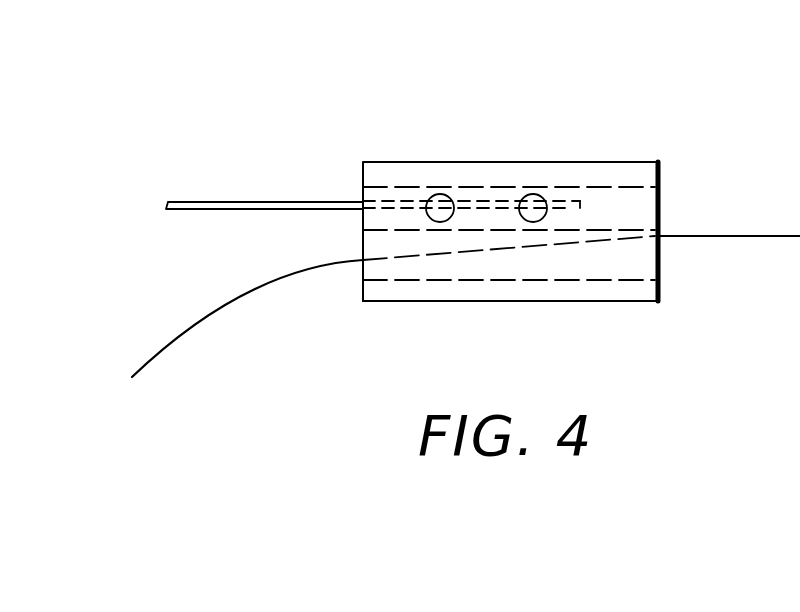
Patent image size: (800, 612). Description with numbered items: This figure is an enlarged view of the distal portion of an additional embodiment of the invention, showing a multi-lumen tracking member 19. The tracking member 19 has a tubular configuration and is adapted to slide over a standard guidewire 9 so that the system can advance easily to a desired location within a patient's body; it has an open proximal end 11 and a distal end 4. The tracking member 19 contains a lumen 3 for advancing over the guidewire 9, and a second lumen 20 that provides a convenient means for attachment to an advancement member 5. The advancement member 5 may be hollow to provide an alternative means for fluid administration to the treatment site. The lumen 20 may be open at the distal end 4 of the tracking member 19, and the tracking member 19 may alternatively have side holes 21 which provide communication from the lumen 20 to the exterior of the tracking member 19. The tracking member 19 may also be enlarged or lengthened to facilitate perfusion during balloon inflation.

The lumen 3 is at (661, 248).
The distal end 4 is at (660, 300).
The advancement member 5 is at (272, 213).
The guidewire 9 is at (248, 295).
The open proximal end 11 is at (362, 228).
The multi-lumen tracking member 19 is at (515, 302).
The lumen 20 is at (620, 202).
The side holes 21 is at (533, 196).